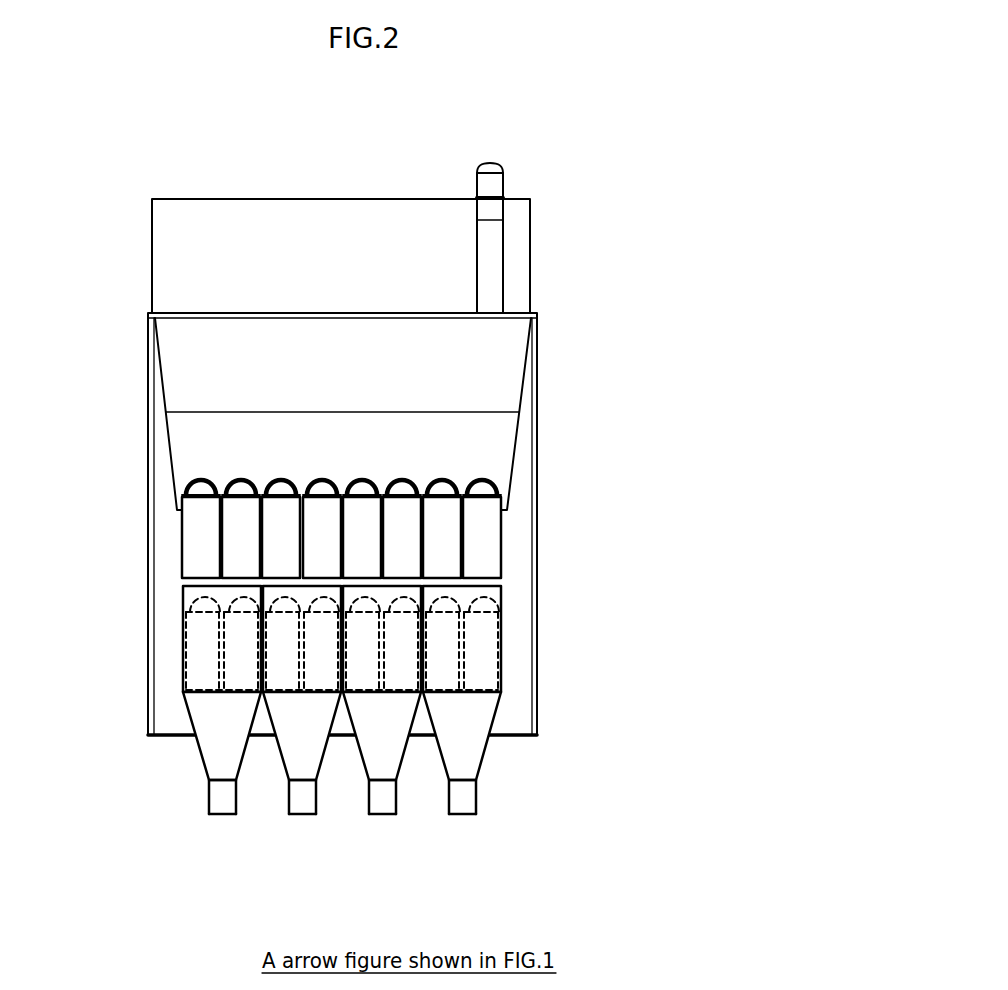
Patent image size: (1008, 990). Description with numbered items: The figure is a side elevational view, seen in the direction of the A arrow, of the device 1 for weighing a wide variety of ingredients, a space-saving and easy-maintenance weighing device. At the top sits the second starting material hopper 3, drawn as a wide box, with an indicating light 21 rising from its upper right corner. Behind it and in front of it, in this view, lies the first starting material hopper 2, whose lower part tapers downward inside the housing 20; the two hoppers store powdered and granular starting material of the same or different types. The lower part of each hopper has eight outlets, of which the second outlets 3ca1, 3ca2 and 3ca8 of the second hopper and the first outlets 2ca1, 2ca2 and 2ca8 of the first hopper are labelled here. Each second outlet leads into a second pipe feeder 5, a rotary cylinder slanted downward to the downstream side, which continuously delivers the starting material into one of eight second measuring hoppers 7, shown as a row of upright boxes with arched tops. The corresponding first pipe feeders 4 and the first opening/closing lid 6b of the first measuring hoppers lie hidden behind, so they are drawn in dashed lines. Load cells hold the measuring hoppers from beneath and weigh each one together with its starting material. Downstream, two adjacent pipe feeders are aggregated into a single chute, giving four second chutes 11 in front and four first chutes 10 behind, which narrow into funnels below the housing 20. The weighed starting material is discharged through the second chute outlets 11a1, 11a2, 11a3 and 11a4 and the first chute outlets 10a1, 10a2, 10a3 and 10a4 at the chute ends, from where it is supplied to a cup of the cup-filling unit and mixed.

The device for weighing a wide variety of ingredients 1 is at (327, 186).
The indicating light 21 is at (505, 175).
The second starting material hopper 3 is at (538, 288).
The first starting material hopper 2 is at (545, 300).
The housing 20 is at (533, 381).
The second outlet 3ca8 is at (203, 484).
The second outlet 3ca2 is at (447, 485).
The second outlet 3ca1 is at (490, 493).
The second pipe feeder 5 is at (410, 439).
The second measuring hopper 7 is at (486, 531).
The first outlet 2ca8 is at (188, 586).
The first outlet 2ca2 is at (464, 580).
The first outlet 2ca1 is at (484, 607).
The first pipe feeder 4 is at (437, 591).
The first opening/closing lid 6b is at (493, 643).
The second chute 11 is at (488, 713).
The first chute 10 is at (495, 722).
The second chute outlet 11a1 is at (470, 806).
The second chute outlet 11a2 is at (390, 806).
The second chute outlet 11a3 is at (310, 806).
The second chute outlet 11a4 is at (230, 806).
The first chute outlet 10a1 is at (458, 814).
The first chute outlet 10a2 is at (376, 814).
The first chute outlet 10a3 is at (296, 814).
The first chute outlet 10a4 is at (216, 814).